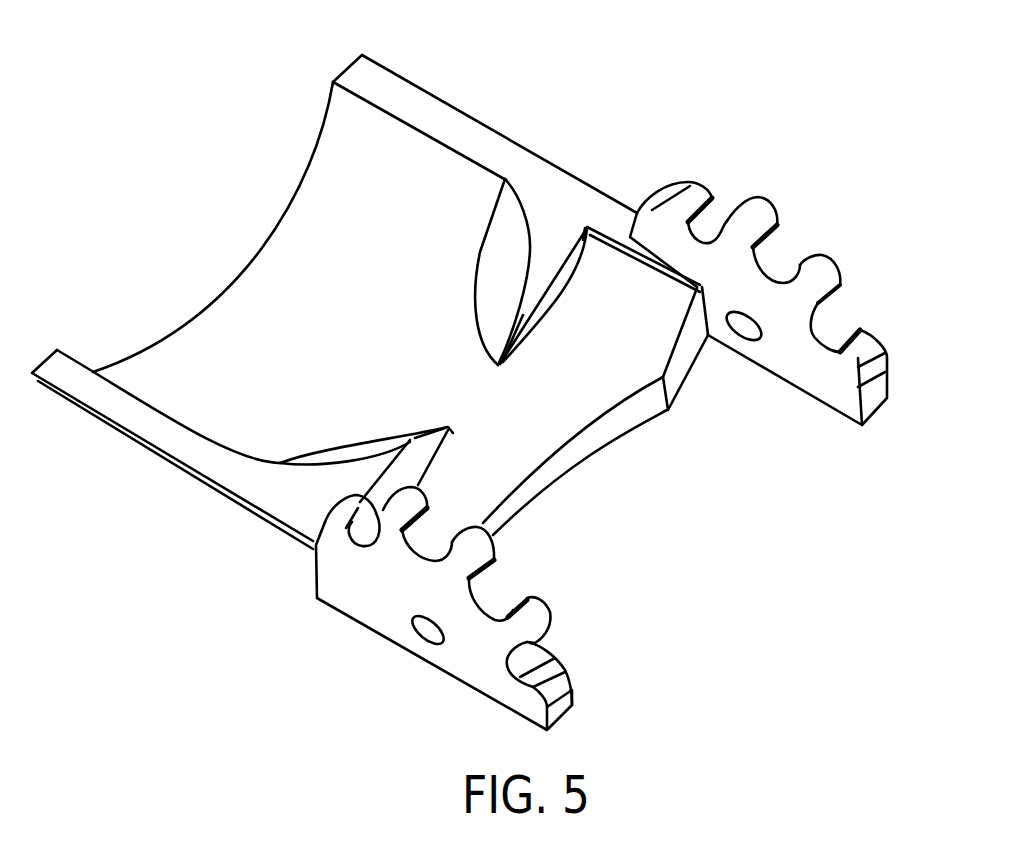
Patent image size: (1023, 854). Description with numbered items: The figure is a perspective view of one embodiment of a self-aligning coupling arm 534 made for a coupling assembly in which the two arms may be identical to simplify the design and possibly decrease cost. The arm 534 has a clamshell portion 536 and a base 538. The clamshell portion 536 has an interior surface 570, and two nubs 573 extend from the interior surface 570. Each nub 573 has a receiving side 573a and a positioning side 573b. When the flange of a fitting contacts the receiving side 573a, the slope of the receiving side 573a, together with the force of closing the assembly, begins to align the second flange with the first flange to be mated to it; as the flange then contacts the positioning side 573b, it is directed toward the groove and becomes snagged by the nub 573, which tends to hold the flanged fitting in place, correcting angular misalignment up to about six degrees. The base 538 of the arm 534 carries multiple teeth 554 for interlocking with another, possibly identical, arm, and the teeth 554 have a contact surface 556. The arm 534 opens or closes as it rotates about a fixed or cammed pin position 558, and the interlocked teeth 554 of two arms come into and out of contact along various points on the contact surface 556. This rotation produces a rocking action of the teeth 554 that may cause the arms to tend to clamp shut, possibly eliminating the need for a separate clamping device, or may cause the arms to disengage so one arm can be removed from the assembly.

The arm 534 is at (818, 227).
The clamshell portion 536 is at (492, 117).
The base 538 is at (818, 282).
The teeth 554 is at (753, 200).
The contact surface 556 is at (498, 587).
The pin position 558 is at (417, 620).
The interior surface 570 is at (316, 329).
The nub 573 is at (528, 303).
The receiving side 573a is at (485, 284).
The positioning side 573b is at (552, 307).